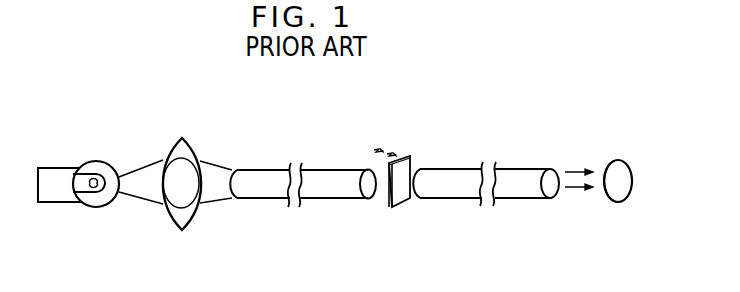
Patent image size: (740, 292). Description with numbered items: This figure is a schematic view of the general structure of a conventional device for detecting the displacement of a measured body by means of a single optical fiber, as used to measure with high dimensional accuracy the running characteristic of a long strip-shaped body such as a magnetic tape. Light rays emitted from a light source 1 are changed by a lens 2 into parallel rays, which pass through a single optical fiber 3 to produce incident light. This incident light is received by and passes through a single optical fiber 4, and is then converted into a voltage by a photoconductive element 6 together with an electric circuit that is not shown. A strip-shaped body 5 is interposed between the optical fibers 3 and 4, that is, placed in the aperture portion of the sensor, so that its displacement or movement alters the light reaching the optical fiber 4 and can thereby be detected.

The light source 1 is at (96, 160).
The lens 2 is at (182, 138).
The optical fiber 3 is at (334, 168).
The optical fiber 4 is at (460, 168).
The strip-shaped body 5 is at (411, 157).
The photoconductive element 6 is at (619, 165).